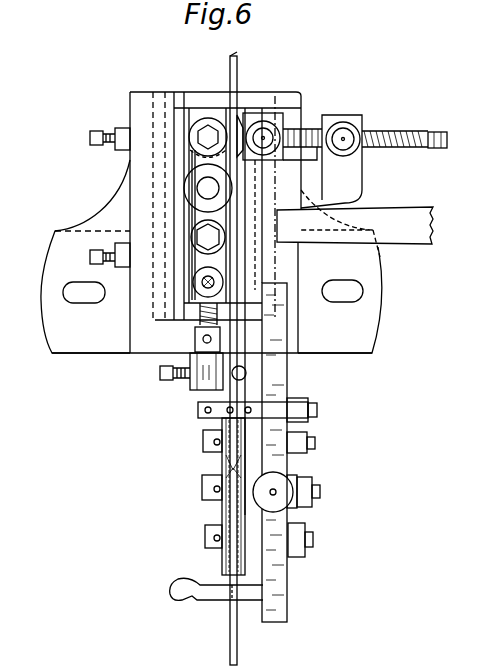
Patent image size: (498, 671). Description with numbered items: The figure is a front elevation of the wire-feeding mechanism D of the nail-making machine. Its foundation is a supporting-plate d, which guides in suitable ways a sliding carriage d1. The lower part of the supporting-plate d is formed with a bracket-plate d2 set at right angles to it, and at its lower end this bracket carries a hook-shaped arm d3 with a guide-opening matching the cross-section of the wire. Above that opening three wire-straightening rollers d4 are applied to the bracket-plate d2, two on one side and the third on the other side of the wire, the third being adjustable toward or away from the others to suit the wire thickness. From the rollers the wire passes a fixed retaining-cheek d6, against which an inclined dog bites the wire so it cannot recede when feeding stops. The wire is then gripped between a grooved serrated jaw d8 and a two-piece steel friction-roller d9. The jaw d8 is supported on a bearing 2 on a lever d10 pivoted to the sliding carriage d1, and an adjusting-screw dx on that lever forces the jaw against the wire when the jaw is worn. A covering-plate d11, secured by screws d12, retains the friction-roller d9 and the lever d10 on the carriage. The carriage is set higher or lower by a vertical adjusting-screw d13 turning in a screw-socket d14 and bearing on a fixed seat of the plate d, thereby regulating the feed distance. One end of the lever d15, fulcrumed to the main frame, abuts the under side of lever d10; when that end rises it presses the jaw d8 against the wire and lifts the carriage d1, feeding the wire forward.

The bearing 2 is at (292, 118).
The supporting-plate d is at (211, 240).
The sliding carriage d1 is at (215, 303).
The bracket-plate d2 is at (280, 327).
The hook-shaped arm d3 is at (216, 606).
The wire-straightening rollers d4 is at (222, 567).
The fixed retaining-cheek d6 is at (211, 371).
The serrated jaw d8 is at (250, 113).
The steel friction-roller d9 is at (208, 137).
The lever d10 is at (340, 186).
The covering-plate d11 is at (208, 209).
The screws d12 is at (210, 137).
The vertical adjusting-screw d13 is at (191, 327).
The screw-socket d14 is at (193, 283).
The lever d15 is at (355, 225).
The adjusting-screw dx is at (404, 128).
The wire-feeding mechanism D is at (160, 432).